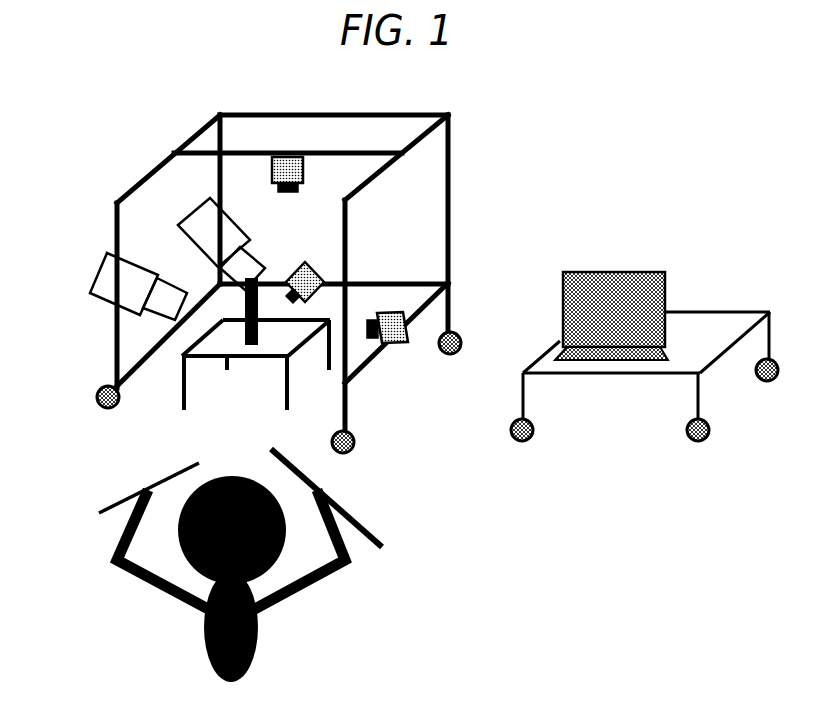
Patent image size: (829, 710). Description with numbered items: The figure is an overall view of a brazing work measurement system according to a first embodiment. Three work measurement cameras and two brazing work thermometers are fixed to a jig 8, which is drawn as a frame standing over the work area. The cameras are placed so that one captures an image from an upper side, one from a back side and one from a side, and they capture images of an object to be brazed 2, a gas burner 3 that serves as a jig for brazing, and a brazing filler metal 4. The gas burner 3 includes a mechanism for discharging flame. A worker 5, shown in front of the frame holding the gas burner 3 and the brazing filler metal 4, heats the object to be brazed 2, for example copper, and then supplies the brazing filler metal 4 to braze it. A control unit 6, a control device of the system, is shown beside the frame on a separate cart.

The object to be brazed 2 is at (245, 348).
The gas burner 3 is at (310, 482).
The brazing filler metal 4 is at (130, 501).
The worker 5 is at (257, 638).
The control unit 6 is at (597, 270).
The jig 8 is at (425, 113).